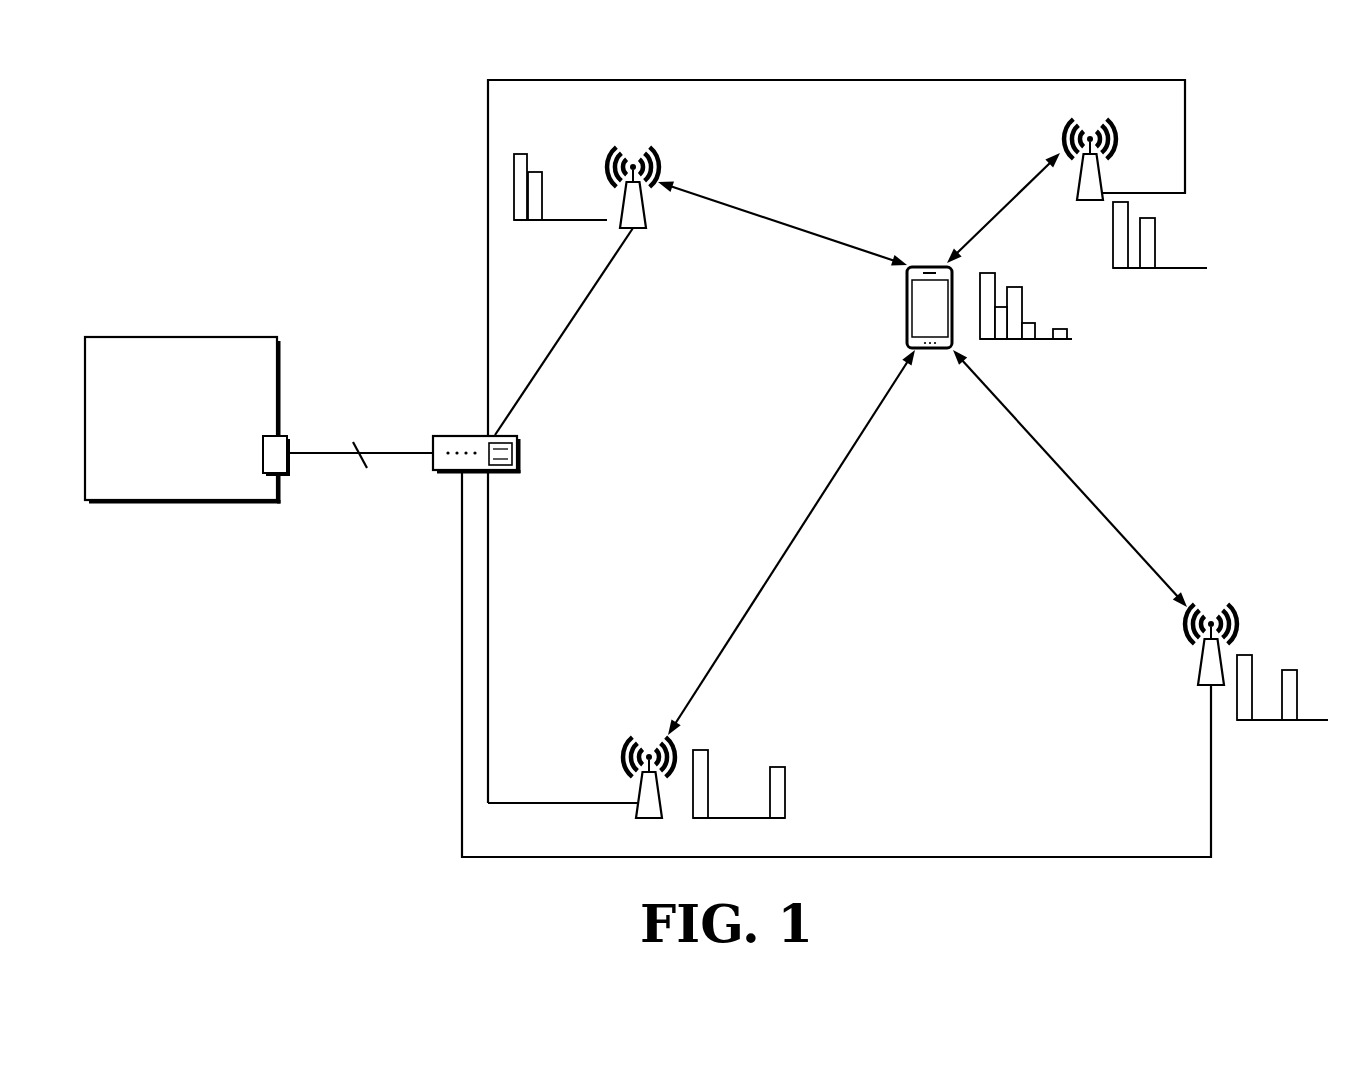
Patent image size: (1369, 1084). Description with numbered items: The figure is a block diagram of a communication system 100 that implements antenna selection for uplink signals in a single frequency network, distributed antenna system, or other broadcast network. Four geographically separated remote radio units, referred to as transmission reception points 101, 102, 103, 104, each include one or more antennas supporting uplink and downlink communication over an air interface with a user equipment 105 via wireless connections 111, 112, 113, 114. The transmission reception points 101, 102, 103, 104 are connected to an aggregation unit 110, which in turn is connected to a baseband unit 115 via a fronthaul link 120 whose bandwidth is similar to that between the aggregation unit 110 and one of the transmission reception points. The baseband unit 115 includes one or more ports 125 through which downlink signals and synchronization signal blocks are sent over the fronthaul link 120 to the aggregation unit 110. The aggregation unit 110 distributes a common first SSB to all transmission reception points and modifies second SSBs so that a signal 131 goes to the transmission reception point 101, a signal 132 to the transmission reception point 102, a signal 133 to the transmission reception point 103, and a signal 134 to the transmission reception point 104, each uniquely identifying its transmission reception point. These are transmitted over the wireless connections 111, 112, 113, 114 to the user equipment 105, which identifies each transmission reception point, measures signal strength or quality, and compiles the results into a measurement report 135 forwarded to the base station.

The communication system 100 is at (160, 104).
The transmission reception point 101 is at (636, 230).
The transmission reception point 102 is at (1092, 203).
The transmission reception point 103 is at (652, 820).
The transmission reception point 104 is at (1198, 670).
The user equipment 105 is at (906, 333).
The aggregation unit 110 is at (460, 435).
The wireless connection 111 is at (792, 220).
The wireless connection 112 is at (993, 210).
The wireless connection 113 is at (775, 563).
The wireless connection 114 is at (1043, 455).
The baseband unit 115 is at (165, 411).
The fronthaul link 120 is at (357, 465).
The port 125 is at (289, 443).
The signal 131 is at (497, 186).
The signal 132 is at (1212, 235).
The signal 133 is at (813, 788).
The signal 134 is at (1252, 740).
The measurement report 135 is at (1033, 360).